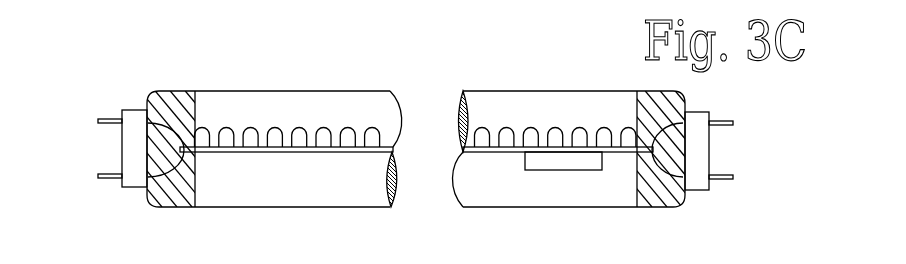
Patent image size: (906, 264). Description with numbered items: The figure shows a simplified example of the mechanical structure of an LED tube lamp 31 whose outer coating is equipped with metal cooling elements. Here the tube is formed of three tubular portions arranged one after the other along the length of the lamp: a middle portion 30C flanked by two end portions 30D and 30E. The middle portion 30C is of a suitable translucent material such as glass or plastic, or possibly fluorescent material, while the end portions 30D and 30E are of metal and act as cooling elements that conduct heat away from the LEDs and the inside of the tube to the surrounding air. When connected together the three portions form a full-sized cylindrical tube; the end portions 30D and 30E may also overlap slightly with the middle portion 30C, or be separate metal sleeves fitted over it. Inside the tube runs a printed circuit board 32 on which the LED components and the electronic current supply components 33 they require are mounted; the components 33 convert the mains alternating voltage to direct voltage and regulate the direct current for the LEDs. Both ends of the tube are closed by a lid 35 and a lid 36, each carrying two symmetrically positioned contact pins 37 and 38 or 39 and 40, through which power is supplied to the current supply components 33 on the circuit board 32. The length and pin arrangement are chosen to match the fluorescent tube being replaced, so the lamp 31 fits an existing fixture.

The lamp 31 is at (361, 70).
The middle portion 30C is at (560, 90).
The end portion 30D is at (150, 207).
The end portion 30E is at (672, 206).
The printed circuit board 32 is at (260, 152).
The current supply components 33 is at (568, 170).
The lid 35 is at (135, 108).
The lid 36 is at (702, 109).
The contact pin 37 is at (110, 117).
The contact pin 38 is at (110, 178).
The contact pin 39 is at (727, 121).
The contact pin 40 is at (727, 180).